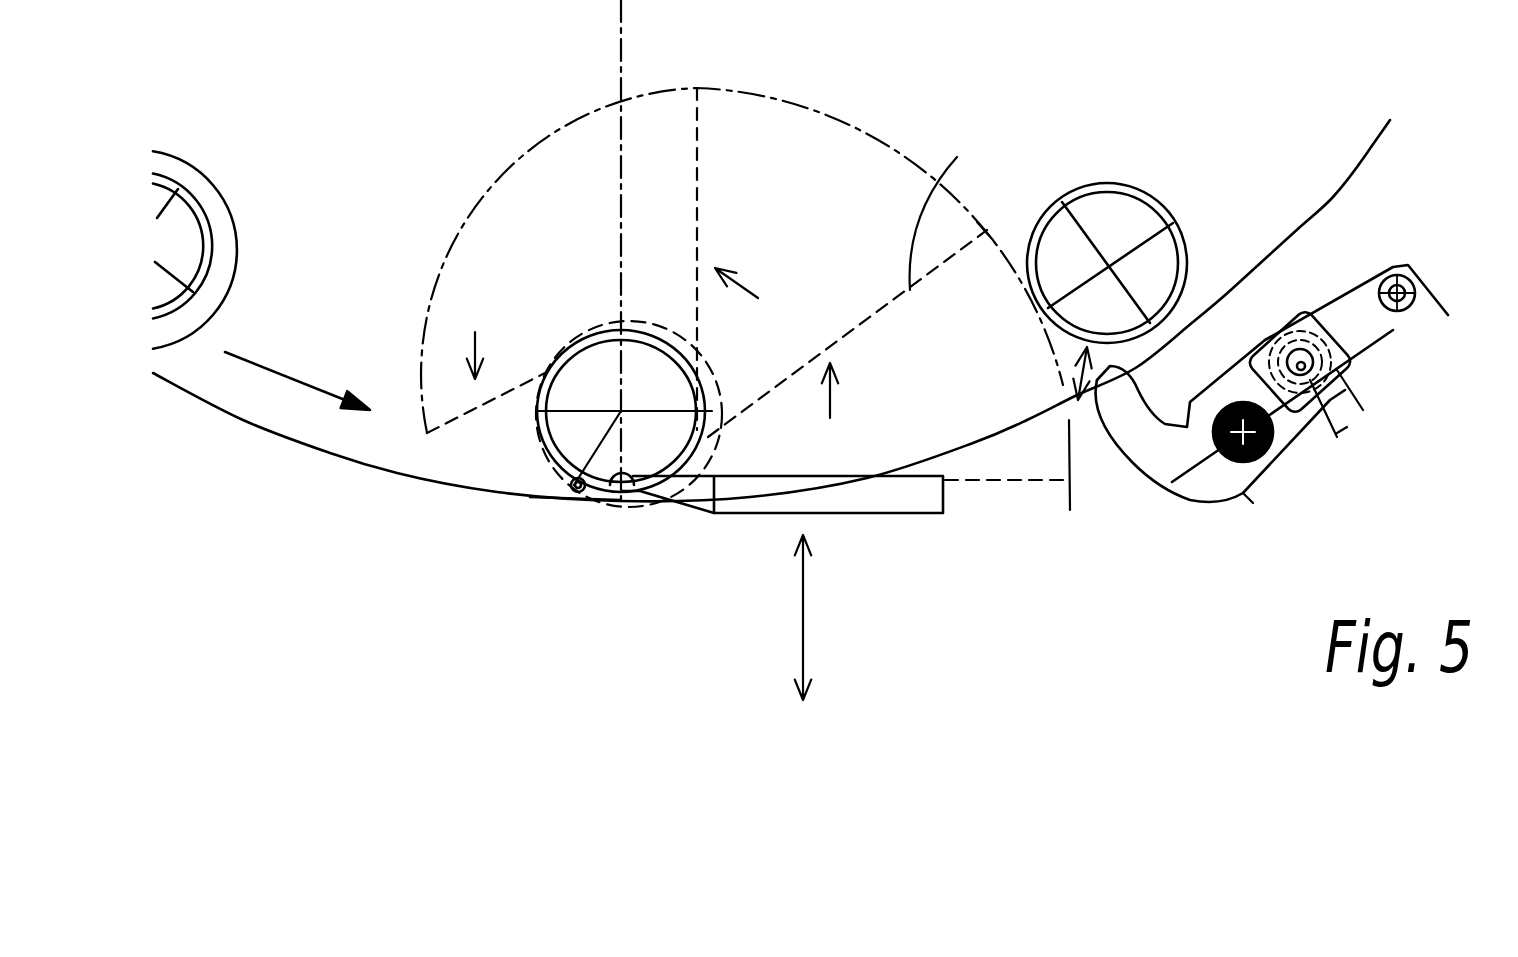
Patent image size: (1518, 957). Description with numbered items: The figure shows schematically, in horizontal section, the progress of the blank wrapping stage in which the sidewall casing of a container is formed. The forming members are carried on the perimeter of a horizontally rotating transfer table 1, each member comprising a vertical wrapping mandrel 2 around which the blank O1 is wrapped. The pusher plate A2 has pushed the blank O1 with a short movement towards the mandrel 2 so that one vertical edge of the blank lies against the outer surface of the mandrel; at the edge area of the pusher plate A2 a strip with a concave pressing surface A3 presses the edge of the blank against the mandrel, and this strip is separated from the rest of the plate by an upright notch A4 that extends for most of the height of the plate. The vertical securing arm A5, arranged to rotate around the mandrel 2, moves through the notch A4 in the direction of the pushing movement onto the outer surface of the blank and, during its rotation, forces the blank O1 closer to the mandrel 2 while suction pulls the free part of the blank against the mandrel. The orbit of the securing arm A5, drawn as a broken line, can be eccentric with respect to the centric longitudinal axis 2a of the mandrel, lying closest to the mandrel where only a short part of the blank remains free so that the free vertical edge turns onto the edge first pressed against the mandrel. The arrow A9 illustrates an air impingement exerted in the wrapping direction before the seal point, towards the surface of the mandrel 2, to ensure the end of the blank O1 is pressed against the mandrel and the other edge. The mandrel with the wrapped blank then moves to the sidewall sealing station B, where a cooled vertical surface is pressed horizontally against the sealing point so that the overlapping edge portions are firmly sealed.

The transfer table 1 is at (330, 430).
The wrapping mandrel 2 is at (207, 238).
The centric longitudinal axis of the mandrel 2a is at (618, 401).
The blank O1 is at (745, 299).
The pusher plate A2 is at (860, 503).
The concave pressing surface A3 is at (612, 497).
The upright notch A4 is at (687, 500).
The securing arm A5 is at (562, 506).
The arrow illustrating air impingement A9 is at (512, 493).
The sidewall sealing station B is at (1350, 307).